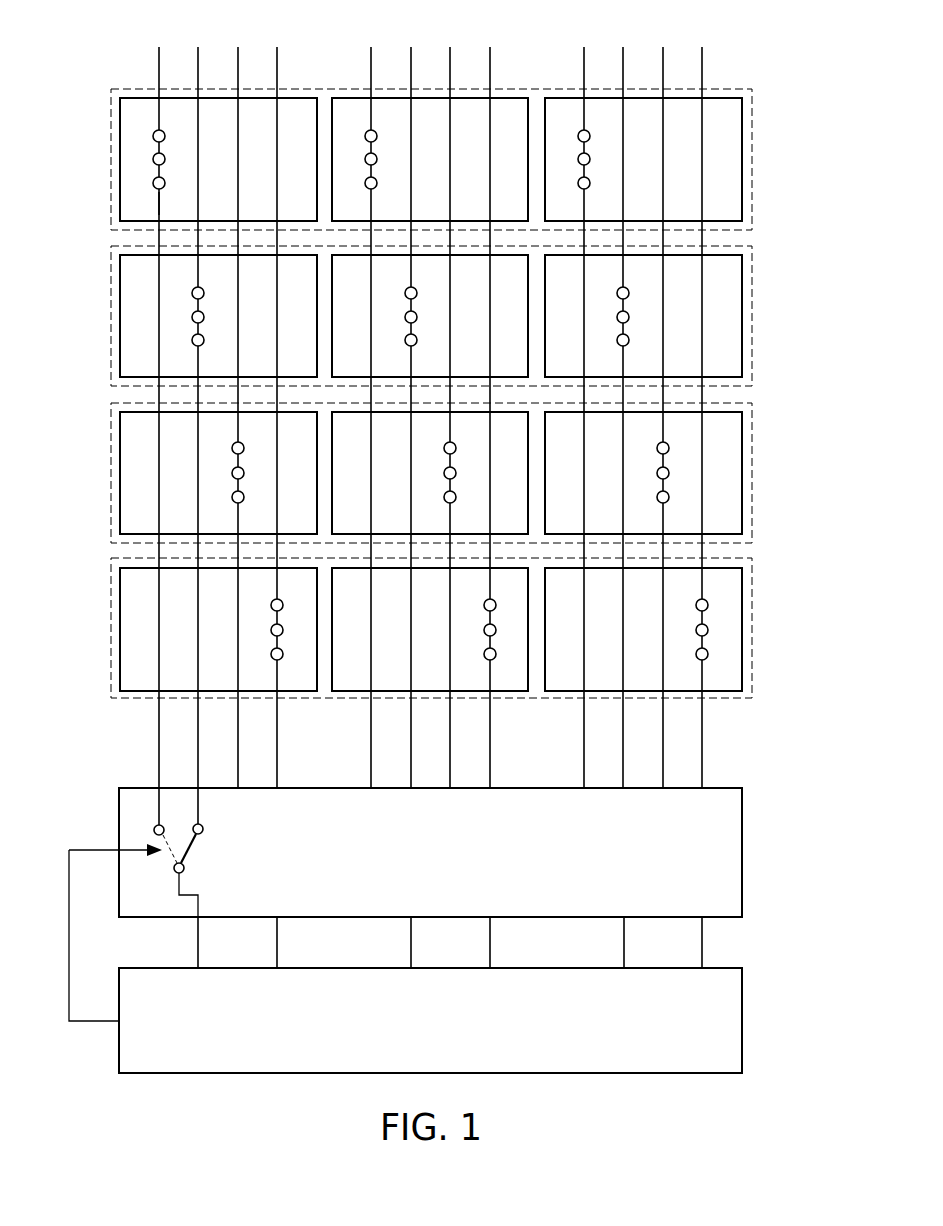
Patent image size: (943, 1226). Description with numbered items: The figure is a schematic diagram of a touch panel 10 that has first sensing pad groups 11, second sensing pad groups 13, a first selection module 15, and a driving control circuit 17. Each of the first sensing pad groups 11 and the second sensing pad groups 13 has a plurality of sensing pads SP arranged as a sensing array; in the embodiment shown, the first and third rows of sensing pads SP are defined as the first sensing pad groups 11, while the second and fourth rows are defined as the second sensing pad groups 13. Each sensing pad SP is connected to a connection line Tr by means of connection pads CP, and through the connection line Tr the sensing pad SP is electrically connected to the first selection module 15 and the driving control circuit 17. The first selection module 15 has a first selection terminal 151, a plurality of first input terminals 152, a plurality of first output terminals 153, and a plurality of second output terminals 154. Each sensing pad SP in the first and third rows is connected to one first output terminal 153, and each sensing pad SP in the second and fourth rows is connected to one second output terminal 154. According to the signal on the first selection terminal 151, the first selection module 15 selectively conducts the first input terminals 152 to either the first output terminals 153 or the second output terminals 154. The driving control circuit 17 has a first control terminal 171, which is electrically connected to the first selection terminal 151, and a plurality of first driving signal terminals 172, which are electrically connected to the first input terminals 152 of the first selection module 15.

The touch panel 10 is at (862, 27).
The first sensing pad groups 11 is at (432, 316).
The second sensing pad groups 13 is at (752, 310).
The sensing pad SP is at (118, 115).
The connection pad CP is at (152, 136).
The connection line Tr is at (157, 201).
The first selection module 15 is at (744, 853).
The first selection terminal 151 is at (90, 850).
The first input terminals 152 is at (277, 943).
The first output terminals 153 is at (238, 750).
The second output terminals 154 is at (198, 721).
The driving control circuit 17 is at (744, 1024).
The first control terminal 171 is at (125, 1022).
The first driving signal terminals 172 is at (198, 970).